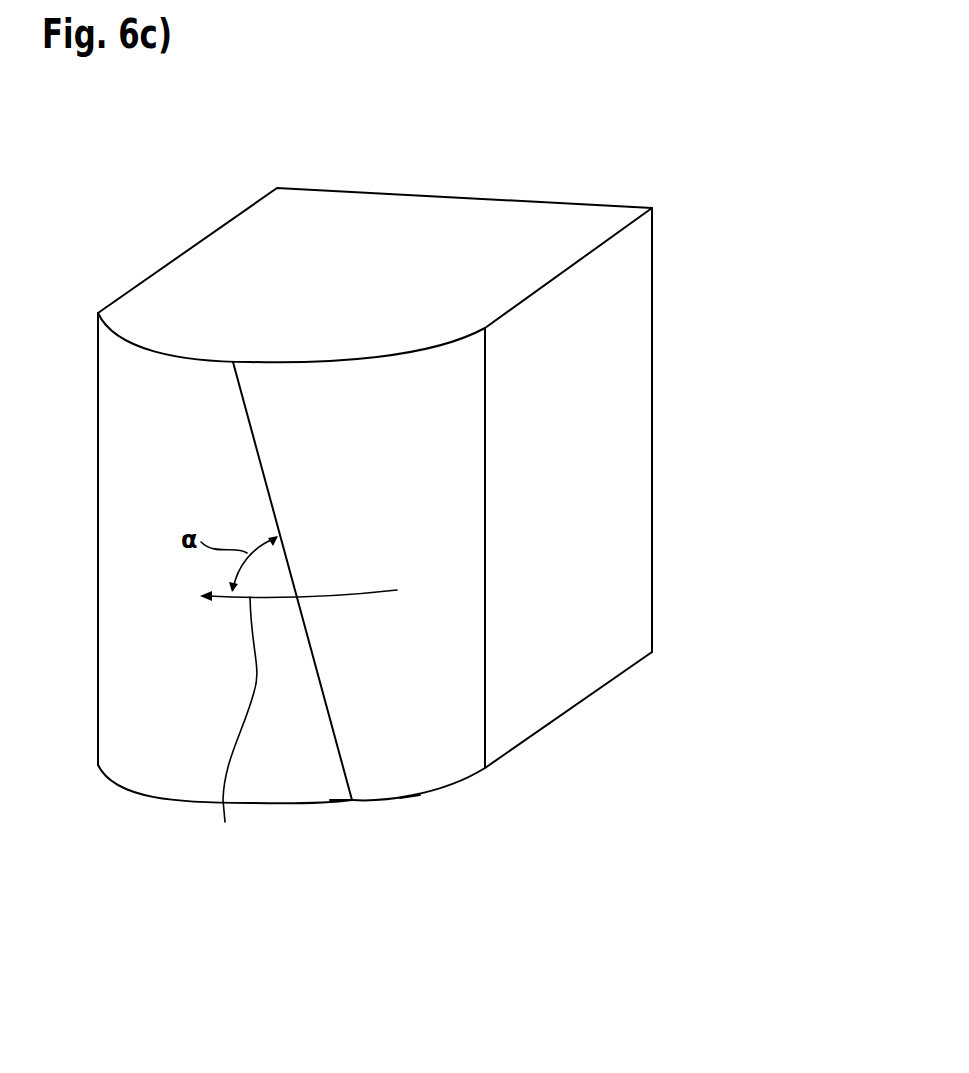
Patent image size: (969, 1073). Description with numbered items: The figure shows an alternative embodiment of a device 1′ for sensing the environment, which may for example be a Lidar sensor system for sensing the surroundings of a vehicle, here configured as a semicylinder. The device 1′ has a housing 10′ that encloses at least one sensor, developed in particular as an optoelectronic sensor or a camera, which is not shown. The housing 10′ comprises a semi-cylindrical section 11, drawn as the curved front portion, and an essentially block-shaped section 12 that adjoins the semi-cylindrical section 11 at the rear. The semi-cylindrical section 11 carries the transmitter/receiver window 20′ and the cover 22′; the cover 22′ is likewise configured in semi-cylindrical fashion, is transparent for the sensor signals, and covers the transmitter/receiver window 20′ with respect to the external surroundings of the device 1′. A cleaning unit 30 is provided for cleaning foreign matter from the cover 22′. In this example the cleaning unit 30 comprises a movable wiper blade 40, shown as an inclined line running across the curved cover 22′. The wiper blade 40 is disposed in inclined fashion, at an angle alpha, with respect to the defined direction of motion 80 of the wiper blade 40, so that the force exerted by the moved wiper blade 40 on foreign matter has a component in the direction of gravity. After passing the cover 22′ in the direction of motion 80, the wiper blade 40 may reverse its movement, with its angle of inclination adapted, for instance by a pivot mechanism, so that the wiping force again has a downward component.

The device for sensing the environment 1′ is at (592, 130).
The housing 10′ is at (633, 362).
The semi-cylindrical section 11 is at (165, 328).
The block-shaped section 12 is at (485, 212).
The transmitter/receiver window 20′ is at (428, 770).
The cover 22′ is at (418, 784).
The cleaning unit 30 is at (338, 826).
The wiper blade 40 is at (270, 498).
The direction of motion 80 is at (233, 728).